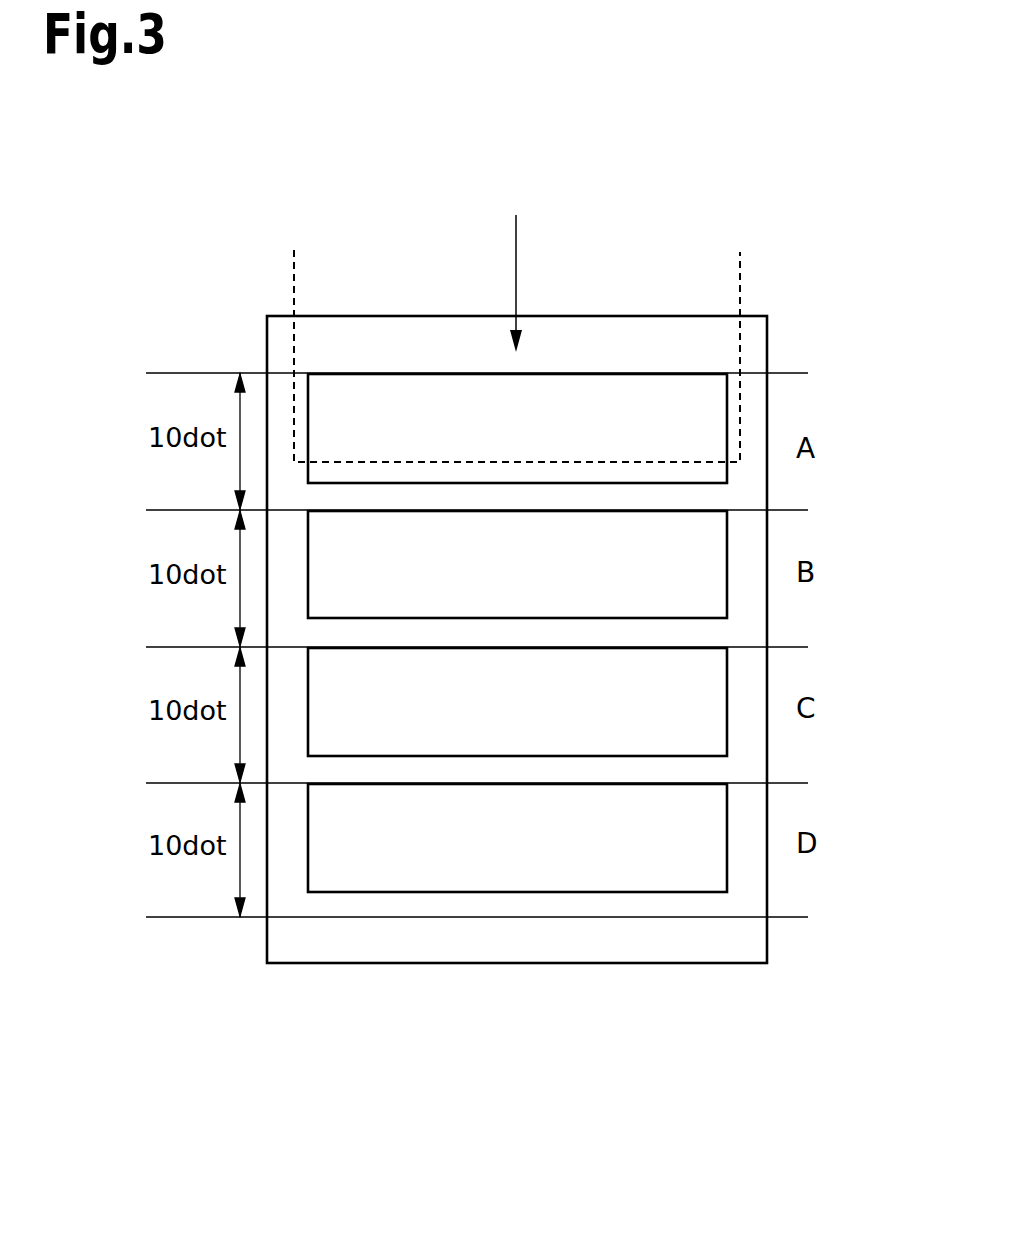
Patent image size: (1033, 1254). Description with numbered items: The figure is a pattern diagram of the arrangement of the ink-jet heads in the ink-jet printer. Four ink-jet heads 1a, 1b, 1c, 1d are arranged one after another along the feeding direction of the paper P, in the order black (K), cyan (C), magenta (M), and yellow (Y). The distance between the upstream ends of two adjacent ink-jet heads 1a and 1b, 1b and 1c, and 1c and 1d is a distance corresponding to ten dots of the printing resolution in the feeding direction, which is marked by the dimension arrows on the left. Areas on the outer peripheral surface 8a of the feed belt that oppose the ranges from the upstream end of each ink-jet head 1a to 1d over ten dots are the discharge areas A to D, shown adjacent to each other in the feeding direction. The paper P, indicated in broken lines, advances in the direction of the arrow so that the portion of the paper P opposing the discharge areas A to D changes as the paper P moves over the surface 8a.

The ink-jet head 1a is at (728, 476).
The ink-jet head 1b is at (728, 604).
The ink-jet head 1c is at (728, 740).
The ink-jet head 1d is at (728, 876).
The outer peripheral surface of the feed belt 8a is at (658, 942).
The paper P is at (740, 268).